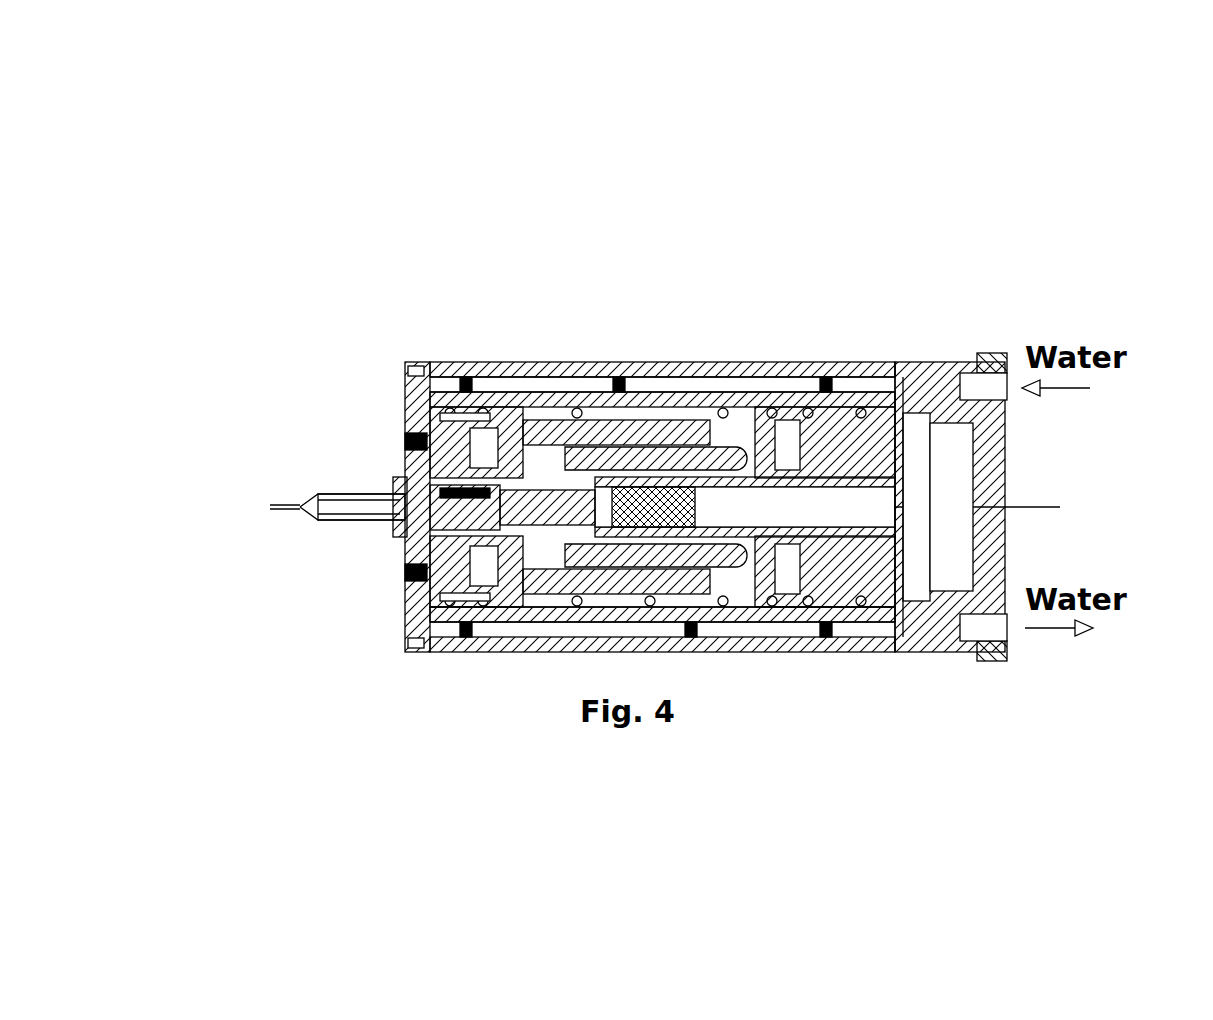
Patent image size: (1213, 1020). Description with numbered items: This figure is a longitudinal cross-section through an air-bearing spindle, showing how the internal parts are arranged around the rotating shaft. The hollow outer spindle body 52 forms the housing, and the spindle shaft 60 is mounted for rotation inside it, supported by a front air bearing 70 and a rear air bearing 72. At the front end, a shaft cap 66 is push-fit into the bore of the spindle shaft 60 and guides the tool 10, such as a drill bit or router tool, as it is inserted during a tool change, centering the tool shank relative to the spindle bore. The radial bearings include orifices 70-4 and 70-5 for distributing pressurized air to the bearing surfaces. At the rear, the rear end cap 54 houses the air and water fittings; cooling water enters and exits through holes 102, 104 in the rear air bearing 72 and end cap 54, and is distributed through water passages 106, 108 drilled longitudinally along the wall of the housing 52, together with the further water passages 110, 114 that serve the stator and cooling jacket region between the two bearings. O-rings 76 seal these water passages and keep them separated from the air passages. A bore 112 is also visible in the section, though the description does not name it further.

The tool 10 is at (322, 522).
The outer spindle body 52 is at (540, 362).
The rear end cap 54 is at (993, 353).
The spindle shaft 60 is at (405, 570).
The shaft cap 66 is at (393, 480).
The front air bearing 70 is at (693, 423).
The orifices 70-4 is at (861, 412).
The orifices 70-5 is at (485, 420).
The rear air bearing 72 is at (893, 435).
The O-rings 76 is at (723, 405).
The hole 102 is at (1008, 396).
The hole 104 is at (1008, 638).
The water passage 106 is at (742, 385).
The water passage 108 is at (713, 627).
The water passage 110 is at (612, 410).
The motor housing 112 is at (696, 602).
The water passage 114 is at (490, 460).